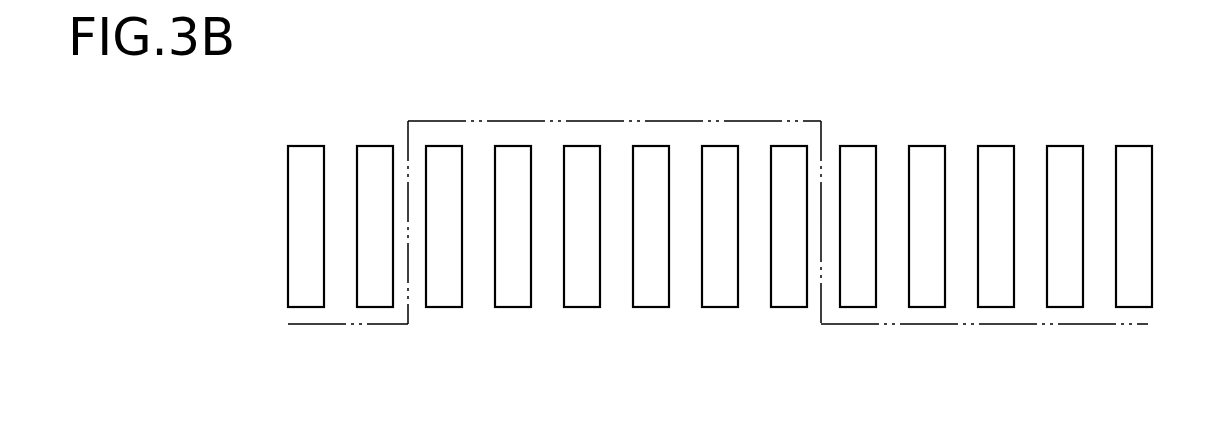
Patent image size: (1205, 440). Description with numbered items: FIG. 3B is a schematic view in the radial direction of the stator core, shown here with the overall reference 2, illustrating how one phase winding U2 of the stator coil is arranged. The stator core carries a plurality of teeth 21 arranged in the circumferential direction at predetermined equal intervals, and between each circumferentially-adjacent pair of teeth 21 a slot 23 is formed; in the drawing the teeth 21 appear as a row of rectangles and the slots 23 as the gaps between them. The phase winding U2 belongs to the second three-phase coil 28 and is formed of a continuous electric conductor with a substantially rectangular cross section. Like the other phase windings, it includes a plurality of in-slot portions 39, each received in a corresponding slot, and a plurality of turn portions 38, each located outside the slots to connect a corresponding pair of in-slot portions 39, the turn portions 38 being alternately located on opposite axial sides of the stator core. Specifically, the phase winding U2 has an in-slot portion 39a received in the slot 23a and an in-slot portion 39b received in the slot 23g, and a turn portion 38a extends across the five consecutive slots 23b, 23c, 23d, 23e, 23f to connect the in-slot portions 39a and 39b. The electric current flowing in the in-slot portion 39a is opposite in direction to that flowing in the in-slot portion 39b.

The stator core 2 is at (1087, 96).
The teeth 21 is at (583, 290).
The slot 23 is at (1093, 157).
The slot 23a is at (400, 157).
The slot 23b is at (478, 283).
The slot 23c is at (546, 283).
The slot 23d is at (615, 283).
The slot 23e is at (684, 283).
The slot 23f is at (752, 283).
The slot 23g is at (828, 156).
The second three-phase coil 28 is at (409, 15).
The turn portions 38 is at (1038, 325).
The turn portion 38a is at (793, 119).
The in-slot portions 39 is at (827, 133).
The in-slot portion 39a is at (408, 310).
The in-slot portion 39b is at (821, 310).
The phase winding U2 is at (639, 215).